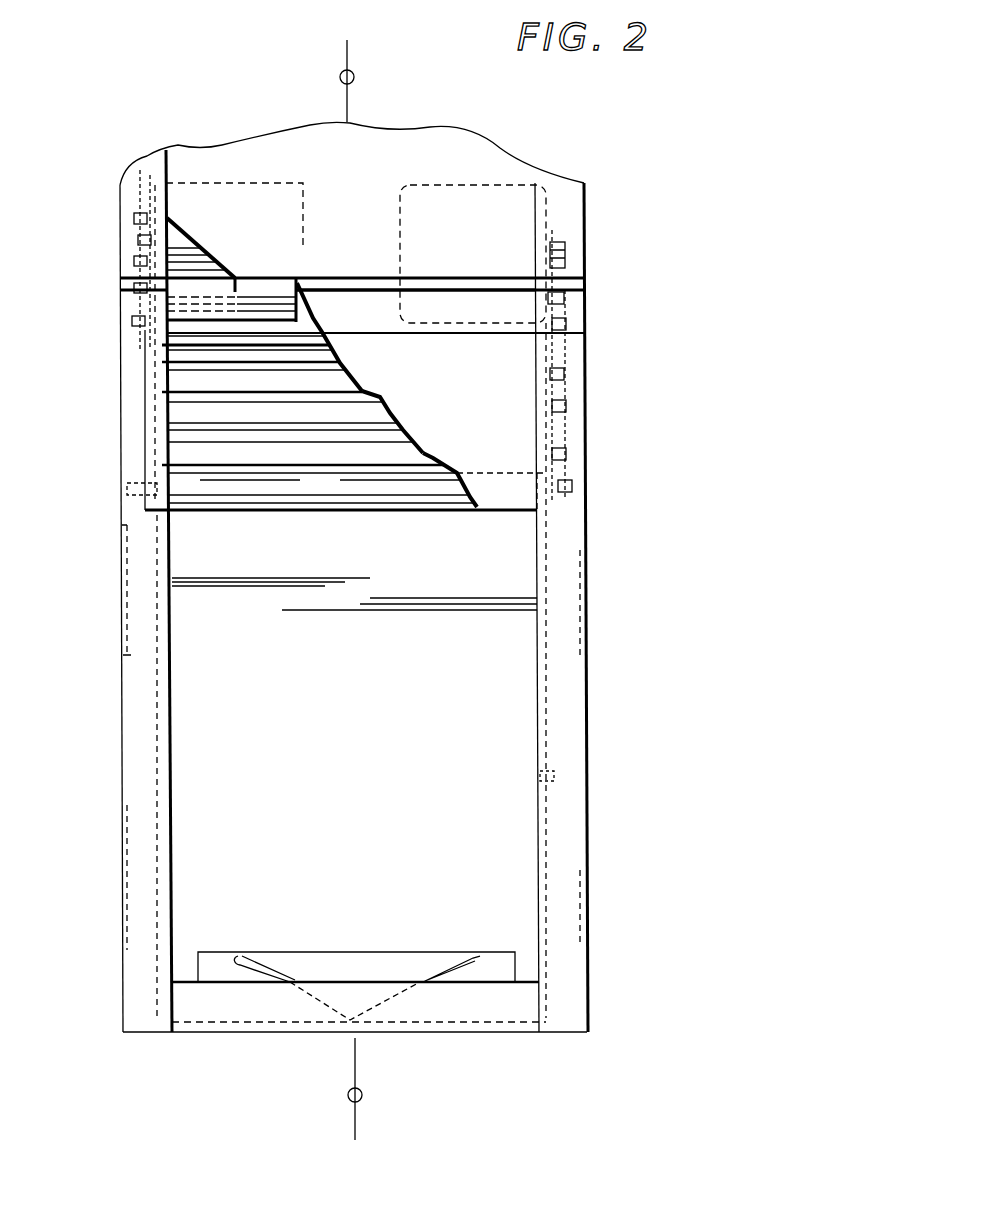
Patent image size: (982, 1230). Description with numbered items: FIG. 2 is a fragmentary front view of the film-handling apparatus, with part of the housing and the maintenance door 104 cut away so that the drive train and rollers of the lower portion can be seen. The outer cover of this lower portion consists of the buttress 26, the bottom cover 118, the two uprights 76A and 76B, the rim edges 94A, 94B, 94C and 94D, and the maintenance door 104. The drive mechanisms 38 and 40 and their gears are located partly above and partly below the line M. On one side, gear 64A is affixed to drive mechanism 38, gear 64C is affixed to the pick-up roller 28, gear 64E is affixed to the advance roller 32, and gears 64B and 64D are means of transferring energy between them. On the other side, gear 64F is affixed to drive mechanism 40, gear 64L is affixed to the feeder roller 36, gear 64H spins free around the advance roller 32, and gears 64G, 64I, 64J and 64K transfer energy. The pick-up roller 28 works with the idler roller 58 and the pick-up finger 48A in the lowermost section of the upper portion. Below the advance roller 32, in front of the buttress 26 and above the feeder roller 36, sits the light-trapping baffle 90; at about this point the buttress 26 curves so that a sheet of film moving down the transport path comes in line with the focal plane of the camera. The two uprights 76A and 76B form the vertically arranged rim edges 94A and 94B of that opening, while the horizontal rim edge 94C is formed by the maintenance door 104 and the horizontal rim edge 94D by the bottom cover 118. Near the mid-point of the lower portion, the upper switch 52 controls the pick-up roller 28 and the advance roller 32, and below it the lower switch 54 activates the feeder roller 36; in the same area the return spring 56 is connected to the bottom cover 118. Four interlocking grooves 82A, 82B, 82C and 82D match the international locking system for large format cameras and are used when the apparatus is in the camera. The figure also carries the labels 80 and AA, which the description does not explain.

The buttress 26 is at (353, 577).
The pick-up roller 28 is at (215, 262).
The advance roller 32 is at (300, 332).
The feeder roller 36 is at (430, 485).
The drive mechanism 38 is at (297, 185).
The drive mechanism 40 is at (440, 185).
The pick-up finger 48A is at (276, 283).
The upper switch 52 is at (555, 778).
The lower switch 54 is at (172, 982).
The return spring 56 is at (270, 972).
The idler roller 58 is at (208, 302).
The gear 64A is at (155, 200).
The gear 64B is at (150, 250).
The gear 64C is at (150, 270).
The gear 64D is at (150, 290).
The gear 64E is at (150, 320).
The gear 64F is at (565, 260).
The gear 64G is at (575, 306).
The gear 64H is at (575, 330).
The gear 64I is at (575, 378).
The gear 64J is at (570, 413).
The gear 64K is at (570, 458).
The gear 64L is at (565, 497).
The upright 76A is at (150, 685).
The upright 76B is at (571, 683).
The compartment 80 is at (342, 220).
The interlocking groove 82A is at (120, 590).
The interlocking groove 82B is at (121, 873).
The interlocking groove 82C is at (587, 593).
The interlocking groove 82D is at (587, 890).
The light-trapping baffle 90 is at (395, 415).
The rim edge 94A is at (172, 717).
The rim edge 94B is at (540, 715).
The rim edge 94C is at (500, 510).
The rim edge 94D is at (529, 982).
The maintenance door 104 is at (431, 369).
The bottom cover 118 is at (460, 1010).
The line M is at (112, 360).
The section line AA is at (340, 78).